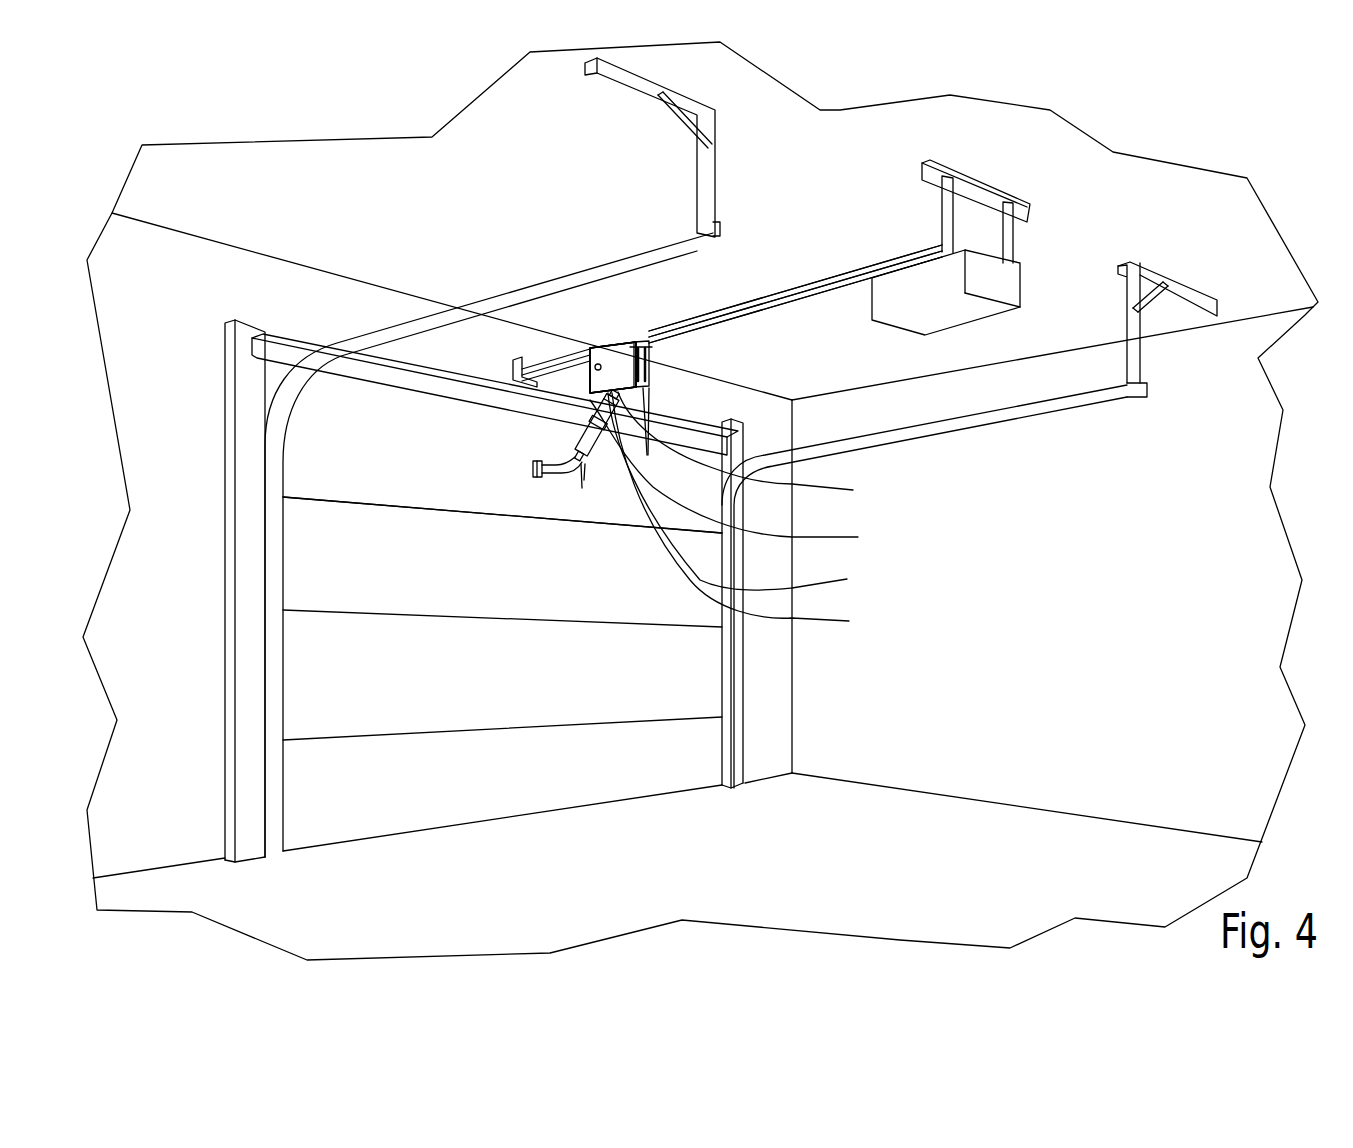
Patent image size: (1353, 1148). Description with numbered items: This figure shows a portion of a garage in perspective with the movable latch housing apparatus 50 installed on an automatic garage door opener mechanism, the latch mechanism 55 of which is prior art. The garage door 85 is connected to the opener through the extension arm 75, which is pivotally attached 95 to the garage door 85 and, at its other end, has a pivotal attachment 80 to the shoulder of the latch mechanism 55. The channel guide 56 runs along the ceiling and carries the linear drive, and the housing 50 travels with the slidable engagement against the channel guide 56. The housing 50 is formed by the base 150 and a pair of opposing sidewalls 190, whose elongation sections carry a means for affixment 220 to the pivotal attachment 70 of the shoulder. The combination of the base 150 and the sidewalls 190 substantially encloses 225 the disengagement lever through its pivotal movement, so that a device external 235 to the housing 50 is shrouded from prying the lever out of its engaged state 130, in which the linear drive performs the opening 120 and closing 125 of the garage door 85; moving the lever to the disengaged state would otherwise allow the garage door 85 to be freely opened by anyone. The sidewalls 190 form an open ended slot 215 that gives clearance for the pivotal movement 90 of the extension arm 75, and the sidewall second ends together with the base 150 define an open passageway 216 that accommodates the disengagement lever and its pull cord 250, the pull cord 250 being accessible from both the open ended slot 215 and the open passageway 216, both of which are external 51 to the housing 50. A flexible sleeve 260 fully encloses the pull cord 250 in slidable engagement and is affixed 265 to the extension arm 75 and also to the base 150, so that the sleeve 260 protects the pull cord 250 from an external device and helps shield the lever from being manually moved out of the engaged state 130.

The movable latch housing apparatus 50 is at (733, 335).
The external 51 is at (884, 372).
The latch mechanism 55 is at (623, 307).
The channel guide 56 is at (827, 280).
The pivotal attachment 70 is at (593, 344).
The extension arm 75 is at (584, 430).
The pivotal attachment 80 is at (593, 344).
The garage door 85 is at (385, 473).
The pivotal movement 90 is at (557, 440).
The pivotal attachment 95 is at (534, 467).
The opening 120 is at (340, 418).
The closing 125 is at (312, 443).
The engaged state 130 is at (571, 250).
The base 150 is at (757, 449).
The sidewalls 190 is at (617, 353).
The open ended slot 215 is at (747, 476).
The open passageway 216 is at (650, 347).
The means for affixment 220 is at (593, 344).
The substantially enclosing 225 is at (668, 307).
The external 235 is at (905, 688).
The pull cord 250 is at (623, 400).
The flexible sleeve 260 is at (752, 495).
The affixed 265 is at (756, 516).